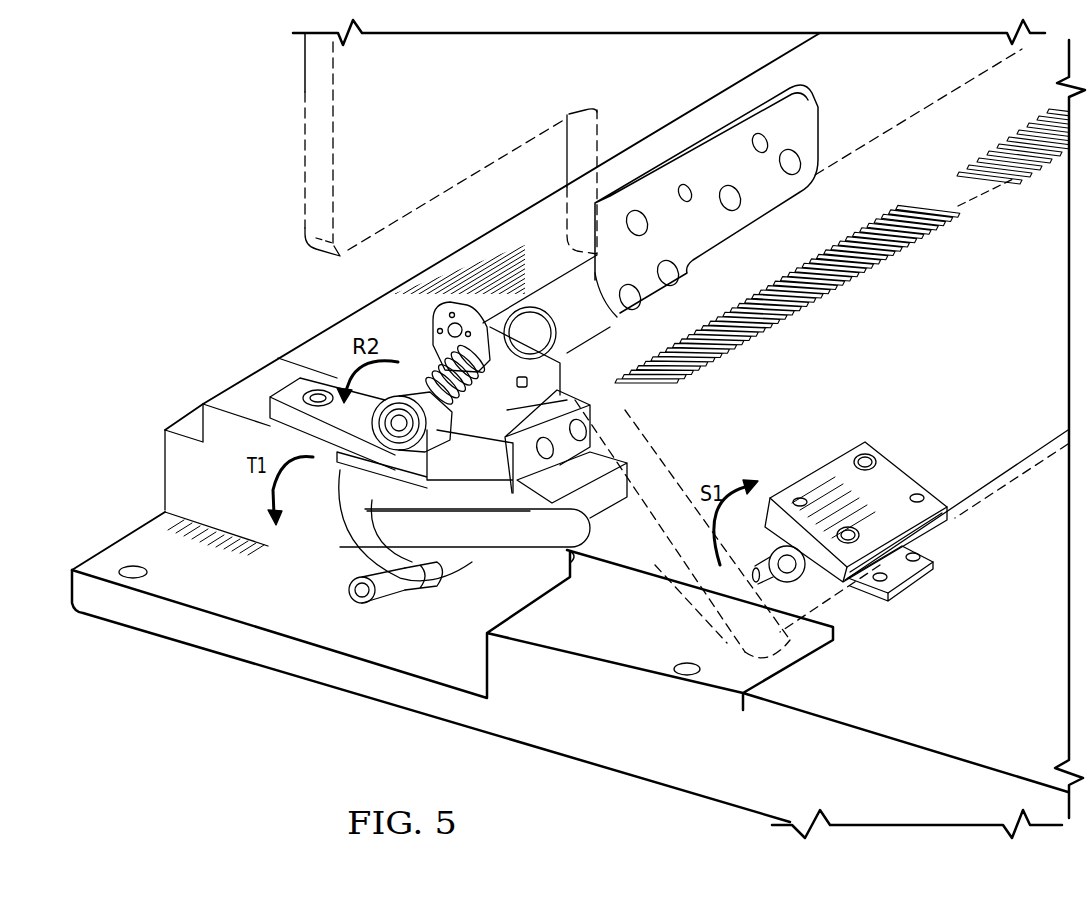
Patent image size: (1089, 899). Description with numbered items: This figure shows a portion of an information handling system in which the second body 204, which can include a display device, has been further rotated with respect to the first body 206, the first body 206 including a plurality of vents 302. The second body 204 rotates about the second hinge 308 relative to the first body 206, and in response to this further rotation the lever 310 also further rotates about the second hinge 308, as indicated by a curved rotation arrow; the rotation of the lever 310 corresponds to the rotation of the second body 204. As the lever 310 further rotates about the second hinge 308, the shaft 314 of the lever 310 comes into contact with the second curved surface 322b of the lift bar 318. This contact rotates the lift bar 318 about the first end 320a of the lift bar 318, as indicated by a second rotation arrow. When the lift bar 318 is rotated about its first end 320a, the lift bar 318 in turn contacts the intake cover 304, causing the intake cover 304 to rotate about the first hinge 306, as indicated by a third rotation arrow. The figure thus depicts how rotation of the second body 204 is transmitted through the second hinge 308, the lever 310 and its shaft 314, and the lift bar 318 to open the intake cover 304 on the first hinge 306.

The second body 204 is at (305, 156).
The first body 206 is at (428, 717).
The vents 302 is at (920, 252).
The intake cover 304 is at (985, 497).
The first hinge 306 is at (905, 468).
The second hinge 308 is at (547, 293).
The lever 310 is at (402, 470).
The shaft 314 is at (350, 592).
The lift bar 318 is at (493, 551).
The first end 320a is at (322, 537).
The second curved surface 322b is at (437, 598).